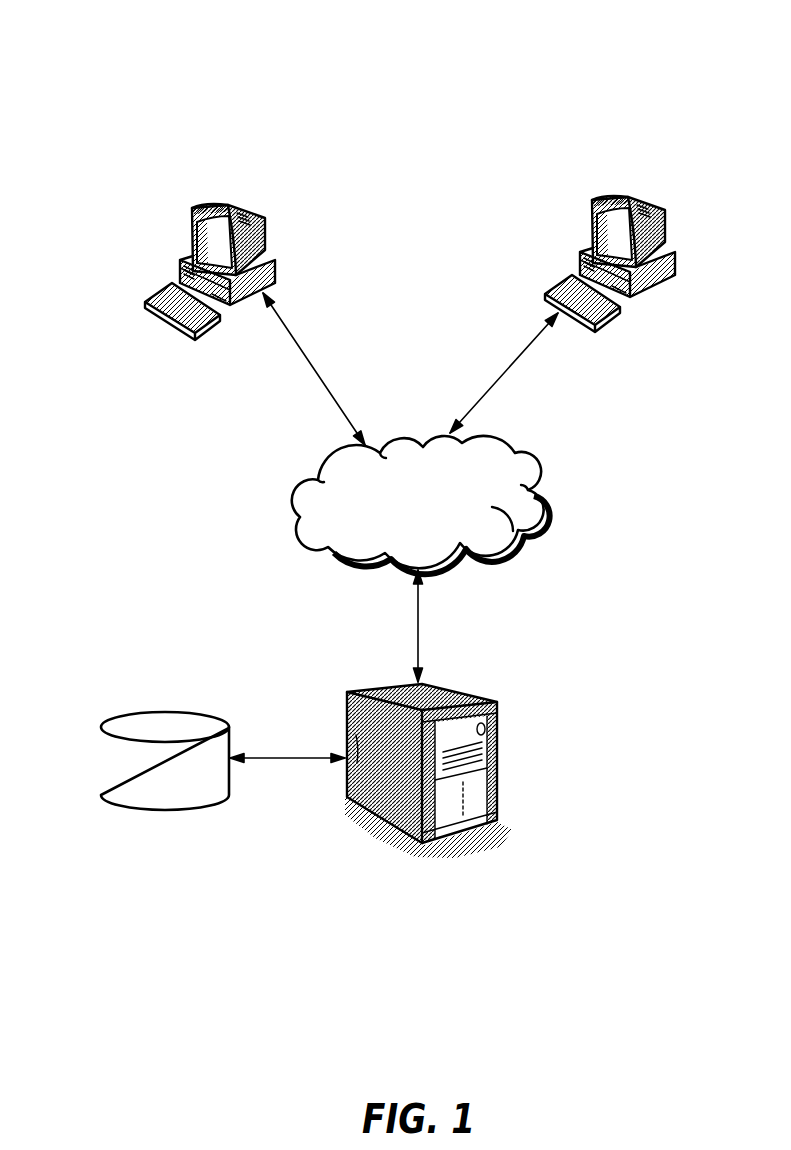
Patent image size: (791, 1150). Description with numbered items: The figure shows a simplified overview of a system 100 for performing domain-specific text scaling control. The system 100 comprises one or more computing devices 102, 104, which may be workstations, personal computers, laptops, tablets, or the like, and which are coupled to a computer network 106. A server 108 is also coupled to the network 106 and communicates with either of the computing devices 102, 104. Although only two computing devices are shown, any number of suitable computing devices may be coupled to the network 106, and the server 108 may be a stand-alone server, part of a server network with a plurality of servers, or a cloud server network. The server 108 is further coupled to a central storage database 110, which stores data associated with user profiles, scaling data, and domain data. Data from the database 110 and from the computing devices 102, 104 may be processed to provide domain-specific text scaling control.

The system 100 is at (447, 98).
The computing device 102 is at (192, 205).
The computing device 104 is at (592, 199).
The computer network 106 is at (445, 518).
The server 108 is at (440, 843).
The central storage database 110 is at (102, 724).